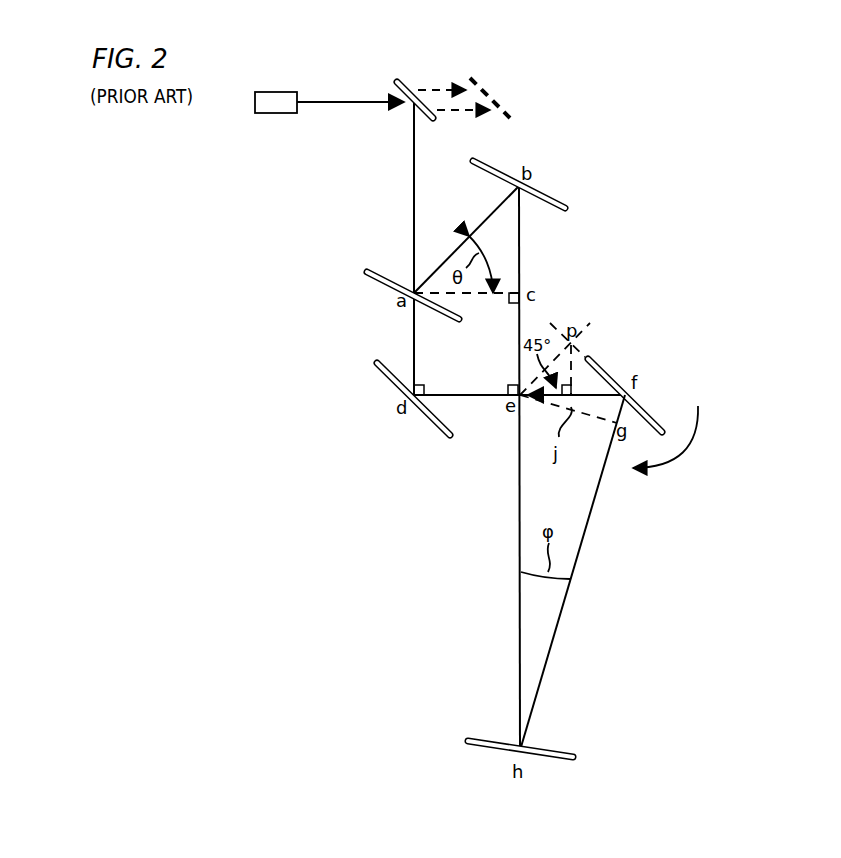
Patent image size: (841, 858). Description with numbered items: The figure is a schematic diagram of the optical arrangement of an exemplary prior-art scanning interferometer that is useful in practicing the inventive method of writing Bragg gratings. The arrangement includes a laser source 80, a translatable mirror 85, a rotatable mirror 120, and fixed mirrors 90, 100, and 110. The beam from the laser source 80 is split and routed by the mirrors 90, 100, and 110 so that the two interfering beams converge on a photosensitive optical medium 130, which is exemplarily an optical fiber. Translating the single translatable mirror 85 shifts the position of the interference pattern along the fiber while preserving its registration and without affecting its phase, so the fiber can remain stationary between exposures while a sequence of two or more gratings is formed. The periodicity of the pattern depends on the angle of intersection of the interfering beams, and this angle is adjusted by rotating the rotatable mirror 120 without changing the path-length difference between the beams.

The laser source 80 is at (285, 113).
The translatable mirror 85 is at (422, 84).
The mirror 90 is at (367, 272).
The mirror 100 is at (555, 199).
The mirror 110 is at (385, 378).
The rotatable mirror 120 is at (648, 416).
The photosensitive optical medium 130 is at (563, 748).